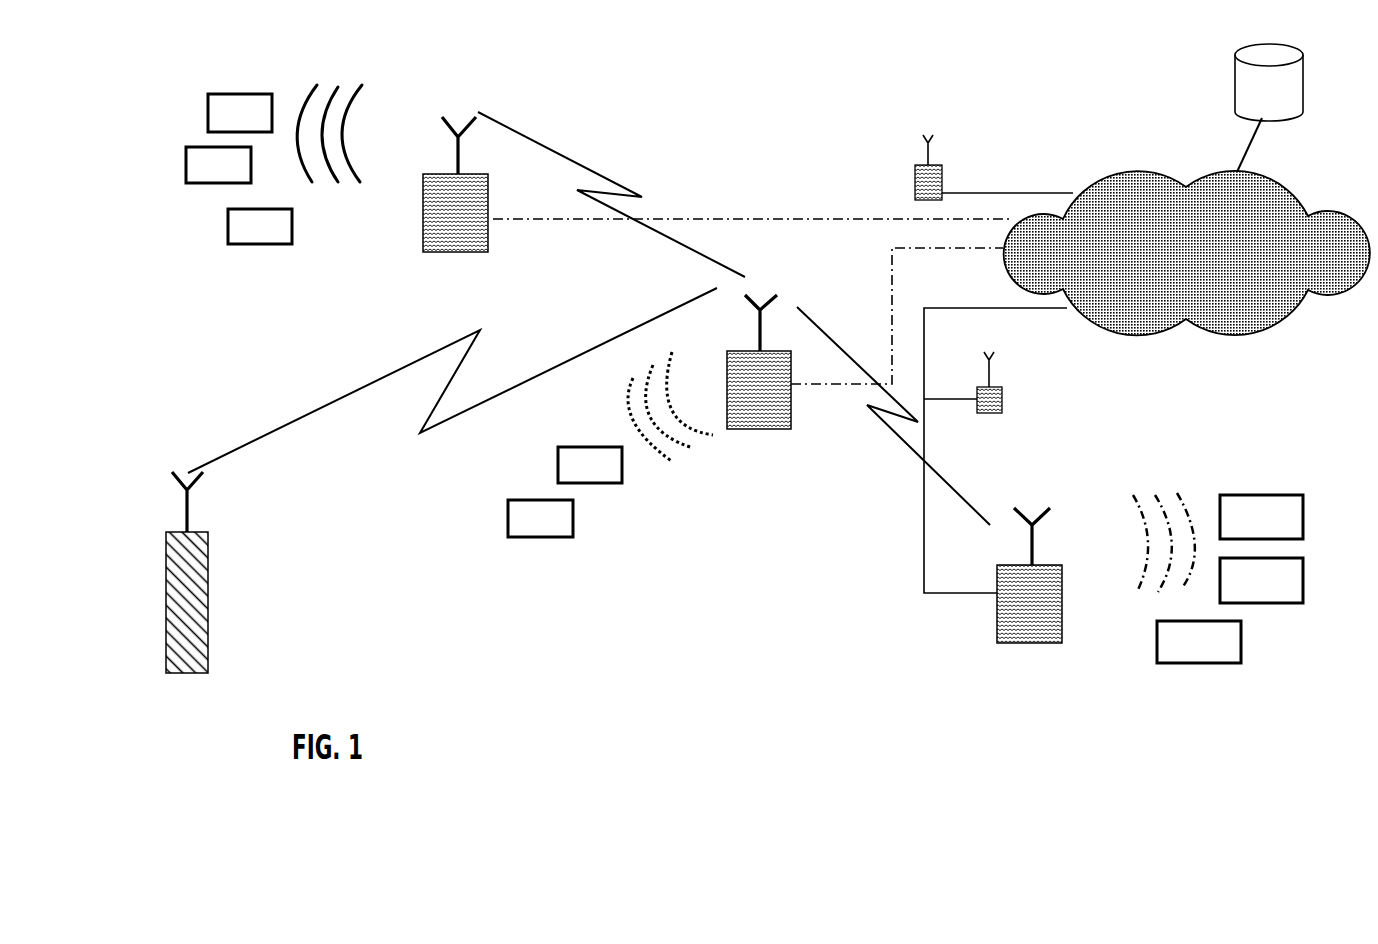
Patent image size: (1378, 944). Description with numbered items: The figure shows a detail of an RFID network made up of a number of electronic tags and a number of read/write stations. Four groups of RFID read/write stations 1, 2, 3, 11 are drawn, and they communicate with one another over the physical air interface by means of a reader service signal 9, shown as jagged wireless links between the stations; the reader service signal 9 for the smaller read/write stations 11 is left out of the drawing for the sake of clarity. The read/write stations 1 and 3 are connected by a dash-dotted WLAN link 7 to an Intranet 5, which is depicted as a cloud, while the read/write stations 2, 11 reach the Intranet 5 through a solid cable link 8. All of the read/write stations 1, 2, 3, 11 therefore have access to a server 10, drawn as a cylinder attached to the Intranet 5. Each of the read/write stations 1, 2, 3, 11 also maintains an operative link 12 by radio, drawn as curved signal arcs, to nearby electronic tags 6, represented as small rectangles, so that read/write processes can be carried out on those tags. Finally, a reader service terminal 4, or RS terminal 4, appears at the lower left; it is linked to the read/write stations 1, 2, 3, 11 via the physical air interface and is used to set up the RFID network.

The RFID read/write station 1 is at (737, 437).
The RFID read/write station 2 is at (987, 620).
The RFID read/write station 3 is at (430, 167).
The reader service terminal 4 is at (210, 610).
The Intranet 5 is at (1160, 333).
The electronic tags 6 is at (225, 226).
The WLAN link 7 is at (910, 308).
The cable link 8 is at (1012, 192).
The reader service signal 9 is at (577, 160).
The server 10 is at (1253, 87).
The RFID read/write station 11 is at (915, 167).
The operative link 12 is at (338, 95).